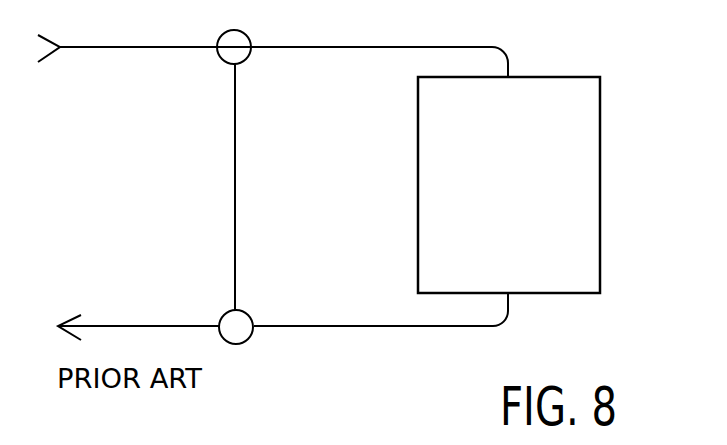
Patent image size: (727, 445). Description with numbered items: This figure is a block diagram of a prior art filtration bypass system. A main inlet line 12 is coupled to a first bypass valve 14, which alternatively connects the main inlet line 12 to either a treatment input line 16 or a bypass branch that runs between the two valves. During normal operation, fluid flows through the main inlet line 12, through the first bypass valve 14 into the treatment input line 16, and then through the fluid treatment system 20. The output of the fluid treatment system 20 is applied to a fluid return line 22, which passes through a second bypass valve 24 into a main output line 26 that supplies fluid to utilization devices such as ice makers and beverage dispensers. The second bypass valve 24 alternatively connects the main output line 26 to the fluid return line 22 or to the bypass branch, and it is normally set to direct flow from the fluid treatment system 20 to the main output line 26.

The main inlet line 12 is at (132, 46).
The first bypass valve 14 is at (222, 37).
The treatment input line 16 is at (316, 48).
The fluid treatment system 20 is at (602, 198).
The fluid return line 22 is at (483, 327).
The second bypass valve 24 is at (243, 312).
The main output line 26 is at (154, 326).